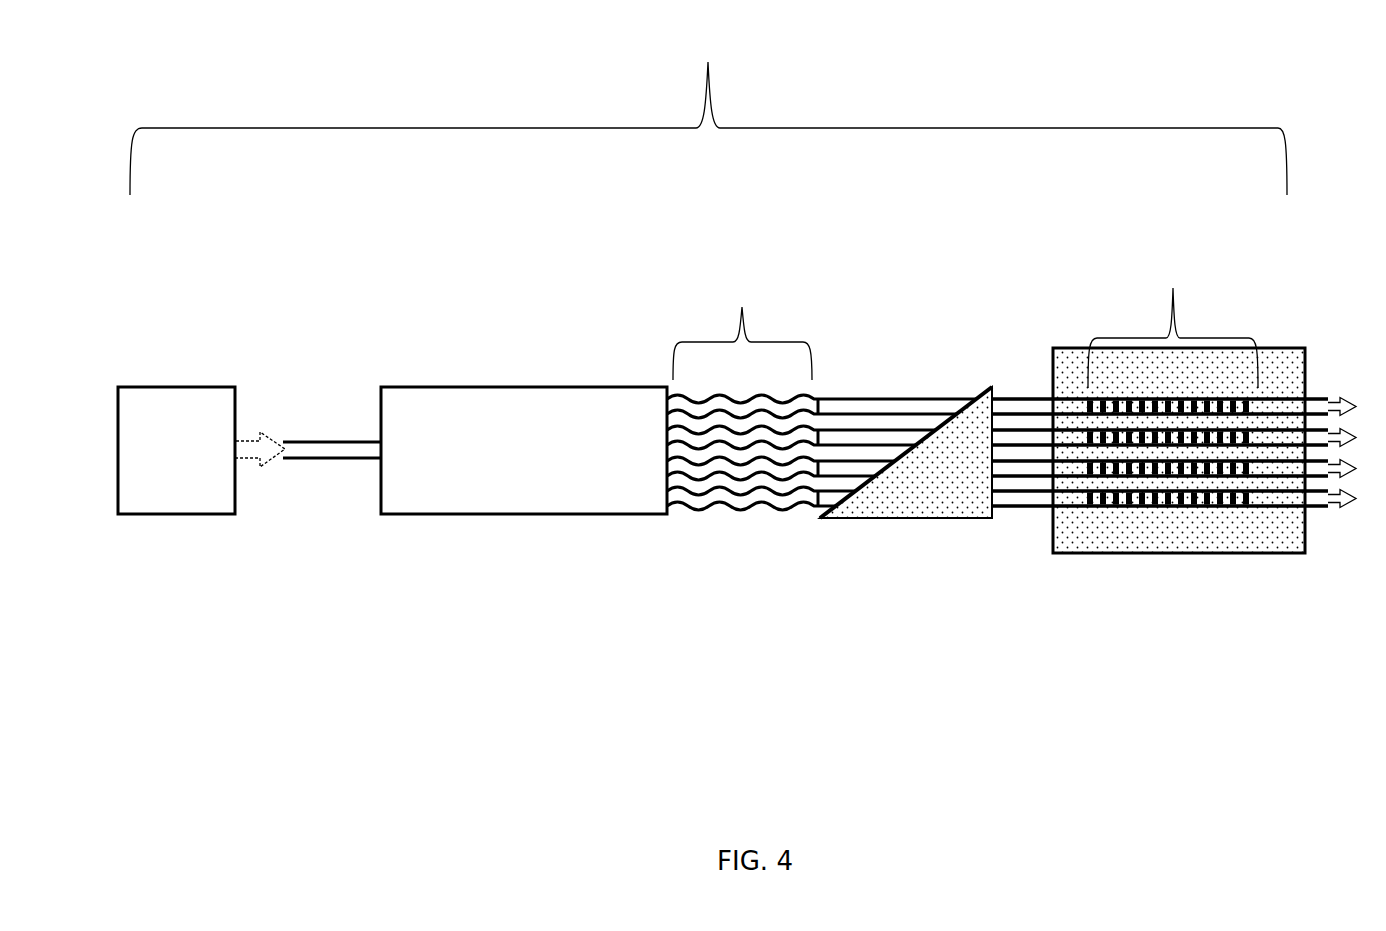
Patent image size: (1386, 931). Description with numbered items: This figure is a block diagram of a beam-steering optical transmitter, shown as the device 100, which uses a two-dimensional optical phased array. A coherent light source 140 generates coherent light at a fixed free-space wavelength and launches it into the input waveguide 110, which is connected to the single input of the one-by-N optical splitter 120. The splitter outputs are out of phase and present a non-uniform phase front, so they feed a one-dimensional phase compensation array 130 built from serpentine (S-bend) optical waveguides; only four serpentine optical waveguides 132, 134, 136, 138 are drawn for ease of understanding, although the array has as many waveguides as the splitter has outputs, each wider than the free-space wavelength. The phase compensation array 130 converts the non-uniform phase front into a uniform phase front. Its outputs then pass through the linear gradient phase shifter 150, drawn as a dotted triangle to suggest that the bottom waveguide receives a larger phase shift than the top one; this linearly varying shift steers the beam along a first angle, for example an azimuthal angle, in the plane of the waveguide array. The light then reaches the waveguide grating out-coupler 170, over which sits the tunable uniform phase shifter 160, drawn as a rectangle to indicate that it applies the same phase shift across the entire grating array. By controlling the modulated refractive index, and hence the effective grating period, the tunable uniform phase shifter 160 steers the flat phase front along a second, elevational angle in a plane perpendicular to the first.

The device 100 is at (687, 69).
The input waveguide 110 is at (305, 458).
The 1×N optical splitter 120 is at (553, 515).
The phase compensation array 130 is at (722, 309).
The serpentine optical waveguide 132 is at (680, 497).
The serpentine optical waveguide 134 is at (700, 465).
The serpentine optical waveguide 136 is at (722, 435).
The serpentine optical waveguide 138 is at (738, 403).
The coherent light source 140 is at (177, 515).
The linear gradient phase shifter 150 is at (940, 487).
The tunable uniform phase shifter 160 is at (1194, 302).
The waveguide grating out-coupler 170 is at (1067, 555).